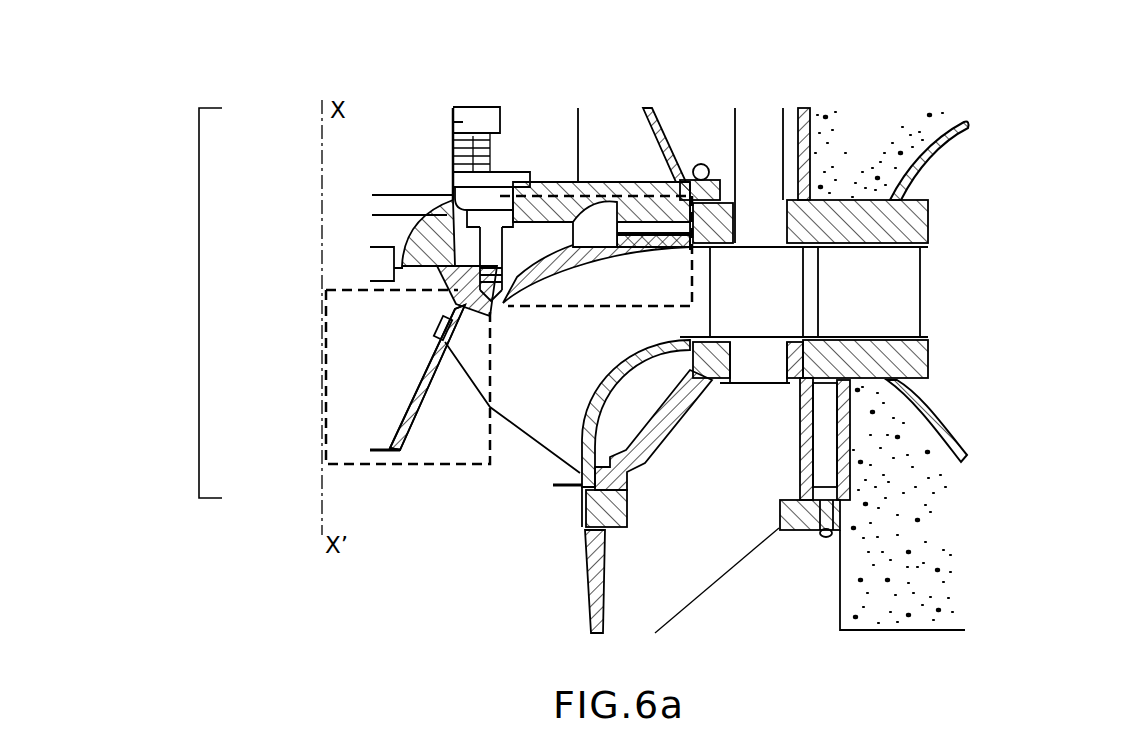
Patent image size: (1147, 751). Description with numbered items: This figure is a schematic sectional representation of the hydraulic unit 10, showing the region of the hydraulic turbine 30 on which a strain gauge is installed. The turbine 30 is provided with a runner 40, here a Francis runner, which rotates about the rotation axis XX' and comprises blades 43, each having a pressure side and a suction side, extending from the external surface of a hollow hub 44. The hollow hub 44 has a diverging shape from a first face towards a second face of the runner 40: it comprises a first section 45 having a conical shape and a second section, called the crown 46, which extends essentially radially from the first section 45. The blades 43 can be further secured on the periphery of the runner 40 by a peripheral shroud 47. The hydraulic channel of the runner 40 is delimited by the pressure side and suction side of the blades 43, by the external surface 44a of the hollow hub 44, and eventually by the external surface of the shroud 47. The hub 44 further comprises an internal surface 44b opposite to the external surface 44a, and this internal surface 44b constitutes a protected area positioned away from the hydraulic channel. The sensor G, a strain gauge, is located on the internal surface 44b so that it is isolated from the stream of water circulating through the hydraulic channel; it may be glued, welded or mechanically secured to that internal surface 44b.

The hydraulic unit 10 is at (148, 168).
The hydraulic turbine 30 is at (199, 292).
The runner 40 is at (594, 246).
The blades 43 is at (630, 320).
The hollow hub 44 is at (393, 434).
The external surface 44a is at (481, 312).
The internal surface 44b is at (420, 400).
The first section 45 is at (437, 478).
The crown 46 is at (556, 183).
The peripheral shroud 47 is at (632, 380).
The sensor G is at (440, 322).